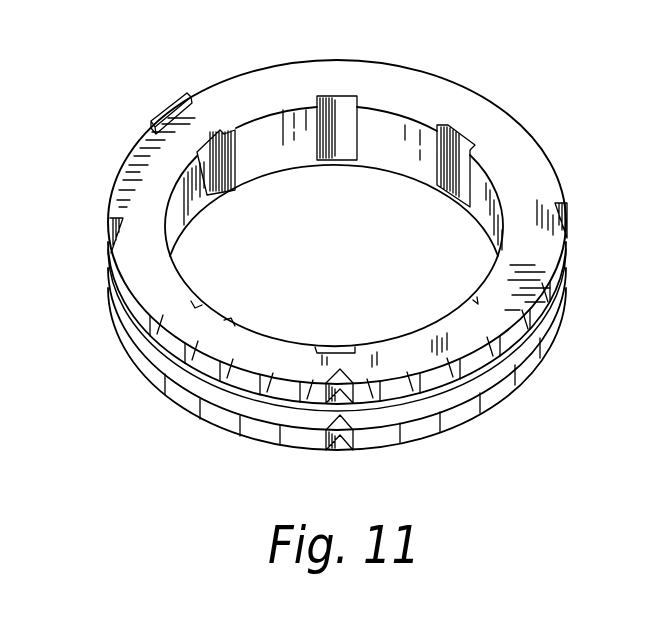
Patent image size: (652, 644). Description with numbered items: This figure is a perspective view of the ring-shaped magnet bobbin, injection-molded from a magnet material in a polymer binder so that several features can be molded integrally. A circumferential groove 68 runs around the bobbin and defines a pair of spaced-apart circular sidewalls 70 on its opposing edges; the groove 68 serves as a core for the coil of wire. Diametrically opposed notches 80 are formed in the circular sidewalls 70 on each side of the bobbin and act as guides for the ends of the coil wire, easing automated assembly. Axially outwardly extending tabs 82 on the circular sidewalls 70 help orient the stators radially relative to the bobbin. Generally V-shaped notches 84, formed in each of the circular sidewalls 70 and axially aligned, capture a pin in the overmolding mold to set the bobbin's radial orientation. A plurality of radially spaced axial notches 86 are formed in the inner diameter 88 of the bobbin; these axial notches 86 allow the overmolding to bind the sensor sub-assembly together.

The circumferential groove 68 is at (520, 365).
The circular sidewalls 70 is at (168, 163).
The notches 80 is at (107, 238).
The axially outwardly extending tabs 82 is at (158, 112).
The V-shaped notches 84 is at (352, 378).
The axial notches 86 is at (252, 138).
The inner diameter 88 is at (486, 252).